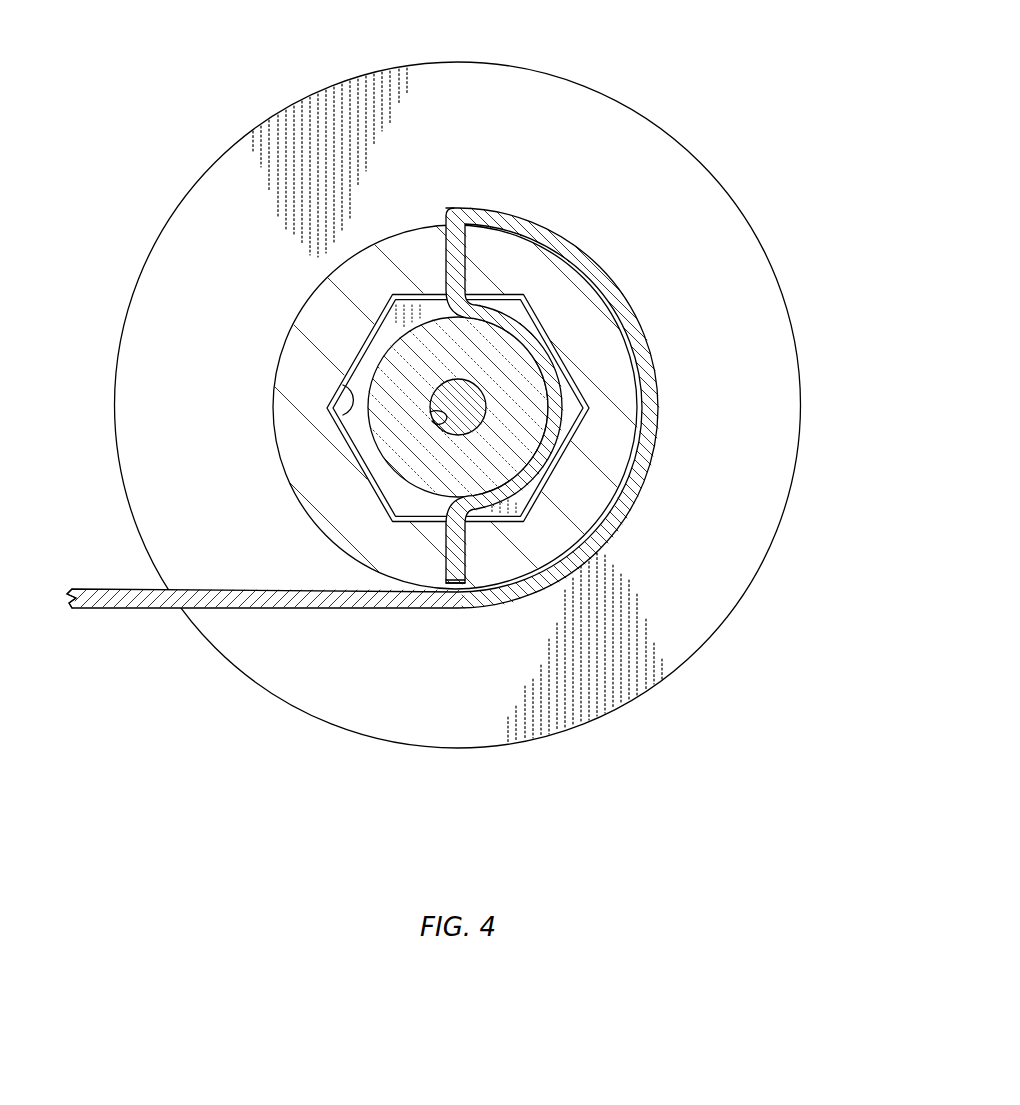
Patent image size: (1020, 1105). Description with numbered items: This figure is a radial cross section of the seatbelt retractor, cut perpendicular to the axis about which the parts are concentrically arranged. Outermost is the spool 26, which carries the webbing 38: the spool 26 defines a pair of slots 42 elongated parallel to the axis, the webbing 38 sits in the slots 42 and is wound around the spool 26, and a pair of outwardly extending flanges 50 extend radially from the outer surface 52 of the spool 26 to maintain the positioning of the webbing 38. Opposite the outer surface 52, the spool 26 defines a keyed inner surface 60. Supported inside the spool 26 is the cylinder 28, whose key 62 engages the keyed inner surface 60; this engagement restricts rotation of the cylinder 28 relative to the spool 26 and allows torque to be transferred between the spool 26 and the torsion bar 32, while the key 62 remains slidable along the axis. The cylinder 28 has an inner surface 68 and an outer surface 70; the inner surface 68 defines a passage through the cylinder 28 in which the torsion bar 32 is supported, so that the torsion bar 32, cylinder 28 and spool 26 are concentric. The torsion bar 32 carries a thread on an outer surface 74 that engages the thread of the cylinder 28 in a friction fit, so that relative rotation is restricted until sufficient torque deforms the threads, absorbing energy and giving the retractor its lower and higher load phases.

The spool 26 is at (297, 367).
The cylinder 28 is at (513, 445).
The torsion bar 32 is at (480, 405).
The webbing 38 is at (293, 612).
The slots 42 is at (443, 253).
The flanges 50 is at (625, 135).
The outer surface 52 is at (303, 303).
The keyed inner surface 60 is at (348, 400).
The key 62 is at (507, 309).
The inner surface 68 is at (437, 423).
The outer surface 70 is at (447, 318).
The outer surface 74 is at (487, 422).